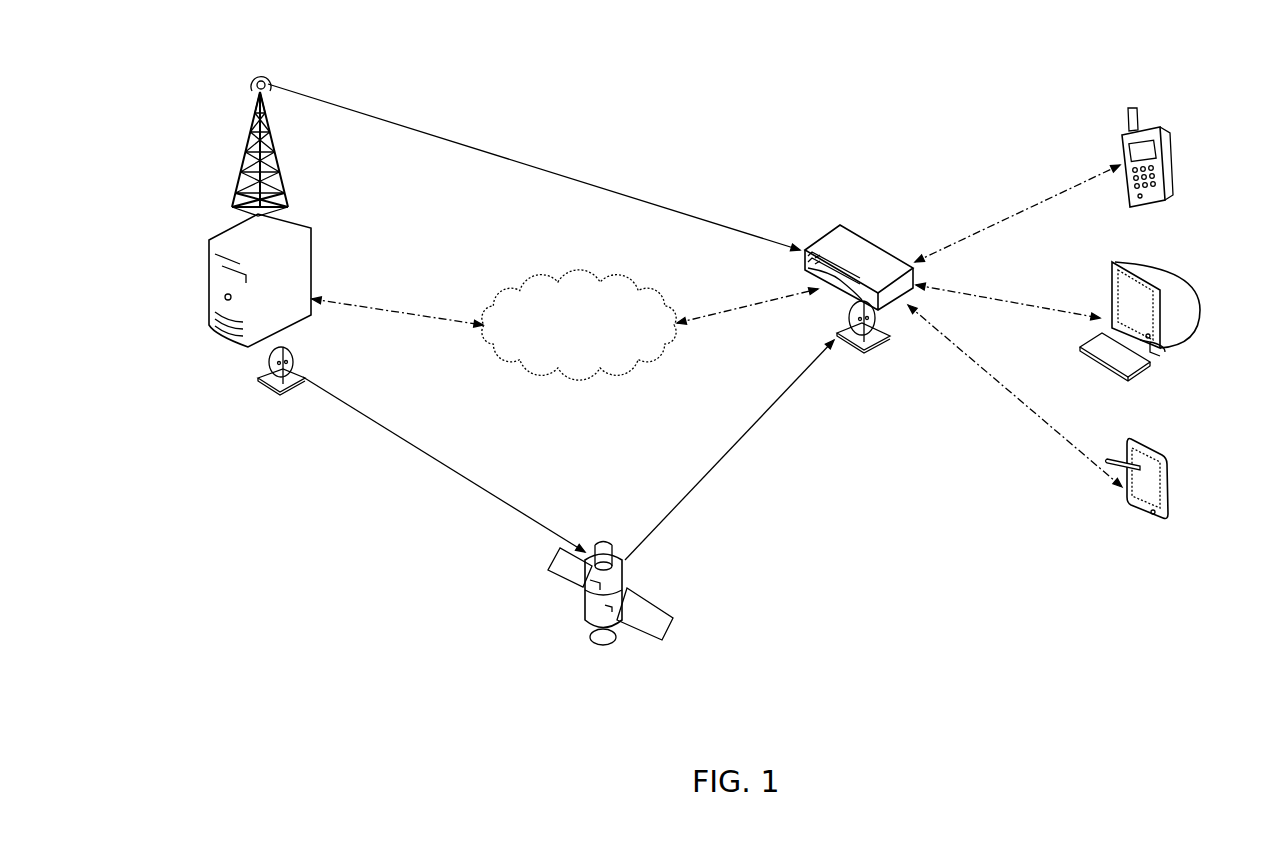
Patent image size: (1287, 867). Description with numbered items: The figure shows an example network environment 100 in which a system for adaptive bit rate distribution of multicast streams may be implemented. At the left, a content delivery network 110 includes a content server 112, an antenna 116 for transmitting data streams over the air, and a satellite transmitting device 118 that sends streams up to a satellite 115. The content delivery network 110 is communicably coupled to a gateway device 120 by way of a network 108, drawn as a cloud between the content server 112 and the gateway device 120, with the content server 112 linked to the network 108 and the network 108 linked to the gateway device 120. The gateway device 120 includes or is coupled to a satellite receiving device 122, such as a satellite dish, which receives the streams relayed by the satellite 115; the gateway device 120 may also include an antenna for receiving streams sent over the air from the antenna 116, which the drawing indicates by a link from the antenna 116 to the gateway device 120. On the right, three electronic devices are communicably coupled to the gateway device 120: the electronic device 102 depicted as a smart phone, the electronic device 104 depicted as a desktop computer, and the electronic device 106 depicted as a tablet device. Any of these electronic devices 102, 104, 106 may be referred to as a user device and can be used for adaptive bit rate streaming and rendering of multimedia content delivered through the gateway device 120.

The network environment 100 is at (1152, 37).
The electronic device 102 is at (1176, 166).
The electronic device 104 is at (1160, 270).
The electronic device 106 is at (1170, 500).
The network 108 is at (585, 281).
The content delivery network 110 is at (185, 372).
The content server 112 is at (312, 272).
The satellite 115 is at (670, 602).
The antenna 116 is at (248, 132).
The satellite transmitting device 118 is at (272, 388).
The gateway device 120 is at (920, 276).
The satellite receiving device 122 is at (863, 352).